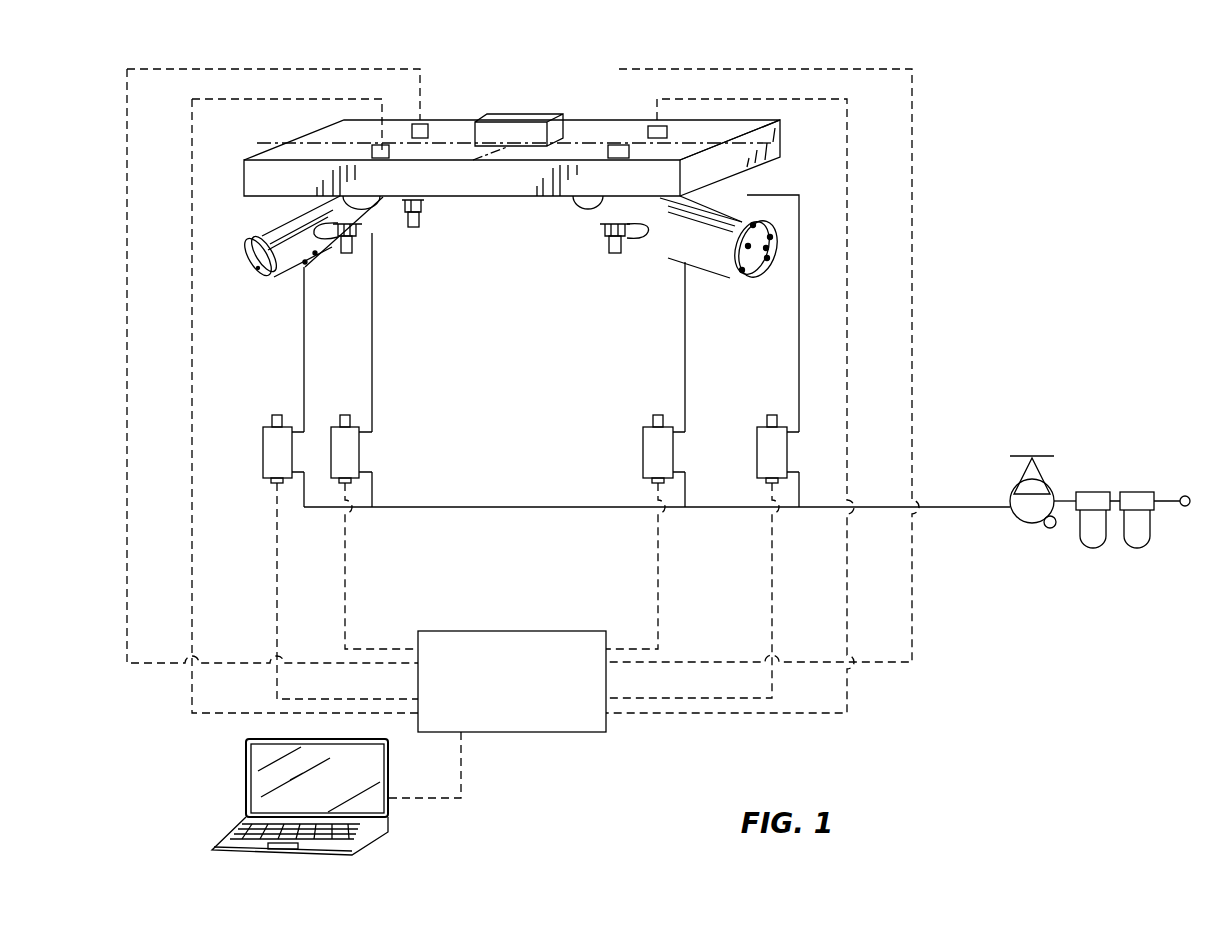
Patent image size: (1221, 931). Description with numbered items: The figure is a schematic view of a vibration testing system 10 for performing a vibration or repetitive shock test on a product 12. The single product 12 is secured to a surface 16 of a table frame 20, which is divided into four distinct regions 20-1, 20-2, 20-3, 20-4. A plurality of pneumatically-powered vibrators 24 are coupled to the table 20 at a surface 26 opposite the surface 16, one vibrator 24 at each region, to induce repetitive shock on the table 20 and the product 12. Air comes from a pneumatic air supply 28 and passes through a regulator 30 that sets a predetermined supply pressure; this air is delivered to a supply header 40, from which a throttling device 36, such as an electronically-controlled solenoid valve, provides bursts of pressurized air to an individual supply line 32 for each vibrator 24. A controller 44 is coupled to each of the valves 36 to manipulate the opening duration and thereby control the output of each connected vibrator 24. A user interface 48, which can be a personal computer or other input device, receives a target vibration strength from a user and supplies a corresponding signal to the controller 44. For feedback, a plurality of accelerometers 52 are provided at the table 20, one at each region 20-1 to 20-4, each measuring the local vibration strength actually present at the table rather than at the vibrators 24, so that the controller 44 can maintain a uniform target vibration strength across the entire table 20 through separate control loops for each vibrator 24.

The vibration testing system 10 is at (1018, 146).
The product 12 is at (510, 112).
The surface 16 is at (277, 150).
The table frame 20 is at (243, 175).
The first region 20-1 is at (395, 130).
The second region 20-2 is at (705, 130).
The third region 20-3 is at (322, 153).
The fourth region 20-4 is at (583, 150).
The vibrator 24 is at (277, 262).
The surface 26 is at (494, 204).
The pneumatic air supply 28 is at (1136, 492).
The regulator 30 is at (1012, 492).
The supply line 32 is at (304, 370).
The throttling device 36 is at (263, 443).
The supply header 40 is at (520, 505).
The controller 44 is at (542, 733).
The user interface 48 is at (246, 773).
The accelerometer 52 is at (389, 150).